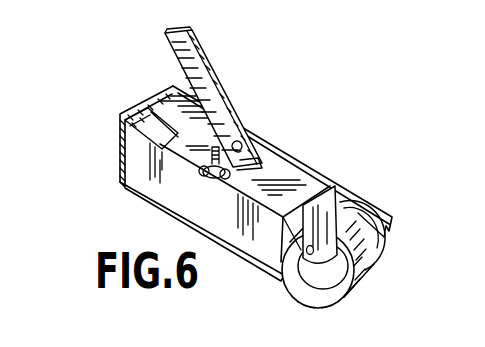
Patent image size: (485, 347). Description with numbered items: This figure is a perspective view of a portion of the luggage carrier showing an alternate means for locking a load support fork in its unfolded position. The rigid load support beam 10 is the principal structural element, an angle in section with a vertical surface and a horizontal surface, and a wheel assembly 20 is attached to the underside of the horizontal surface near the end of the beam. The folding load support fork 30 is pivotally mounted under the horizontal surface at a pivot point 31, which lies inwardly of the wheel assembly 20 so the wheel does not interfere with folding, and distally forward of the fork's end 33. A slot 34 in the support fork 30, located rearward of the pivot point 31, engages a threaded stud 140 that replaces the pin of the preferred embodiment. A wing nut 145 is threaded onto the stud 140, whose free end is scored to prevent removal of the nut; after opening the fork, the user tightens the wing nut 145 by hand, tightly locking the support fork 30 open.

The load support beam 10 is at (238, 266).
The wheel assembly 20 is at (382, 262).
The load support fork 30 is at (214, 72).
The pivot point 31 is at (245, 141).
The end of load support fork 33 is at (265, 183).
The slot 34 is at (236, 163).
The stud 140 is at (211, 149).
The wing nut 145 is at (201, 174).